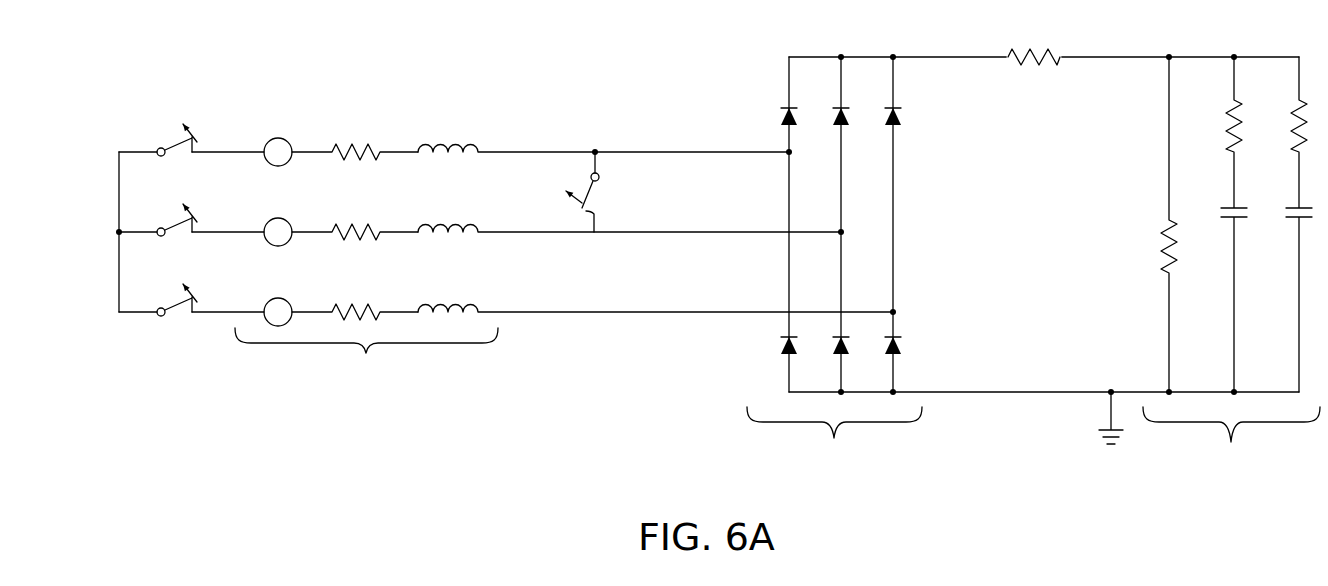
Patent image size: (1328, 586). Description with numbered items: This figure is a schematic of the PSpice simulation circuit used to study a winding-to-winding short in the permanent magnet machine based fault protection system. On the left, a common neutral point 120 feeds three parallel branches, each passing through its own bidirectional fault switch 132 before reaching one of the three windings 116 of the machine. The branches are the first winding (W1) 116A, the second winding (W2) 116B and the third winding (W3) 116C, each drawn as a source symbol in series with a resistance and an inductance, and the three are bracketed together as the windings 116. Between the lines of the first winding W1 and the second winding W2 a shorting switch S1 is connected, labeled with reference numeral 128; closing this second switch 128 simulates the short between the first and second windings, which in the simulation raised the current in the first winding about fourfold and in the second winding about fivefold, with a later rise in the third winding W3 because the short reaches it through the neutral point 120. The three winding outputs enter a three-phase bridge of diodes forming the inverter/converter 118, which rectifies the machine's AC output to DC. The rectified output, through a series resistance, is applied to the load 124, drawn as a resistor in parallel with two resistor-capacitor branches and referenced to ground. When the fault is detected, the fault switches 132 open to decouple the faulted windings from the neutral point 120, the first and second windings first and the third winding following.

The neutral point 120 is at (119, 210).
The bidirectional fault switch 132 is at (160, 146).
The windings 116 is at (542, 234).
The first winding 116A is at (543, 125).
The second winding 116B is at (520, 212).
The third winding 116C is at (520, 292).
The first winding W1 is at (541, 137).
The second winding W2 is at (540, 219).
The third winding W3 is at (540, 299).
The second switch 128 is at (583, 218).
The switch S1 is at (626, 202).
The inverter/converter 118 is at (1023, 263).
The load 124 is at (1164, 262).